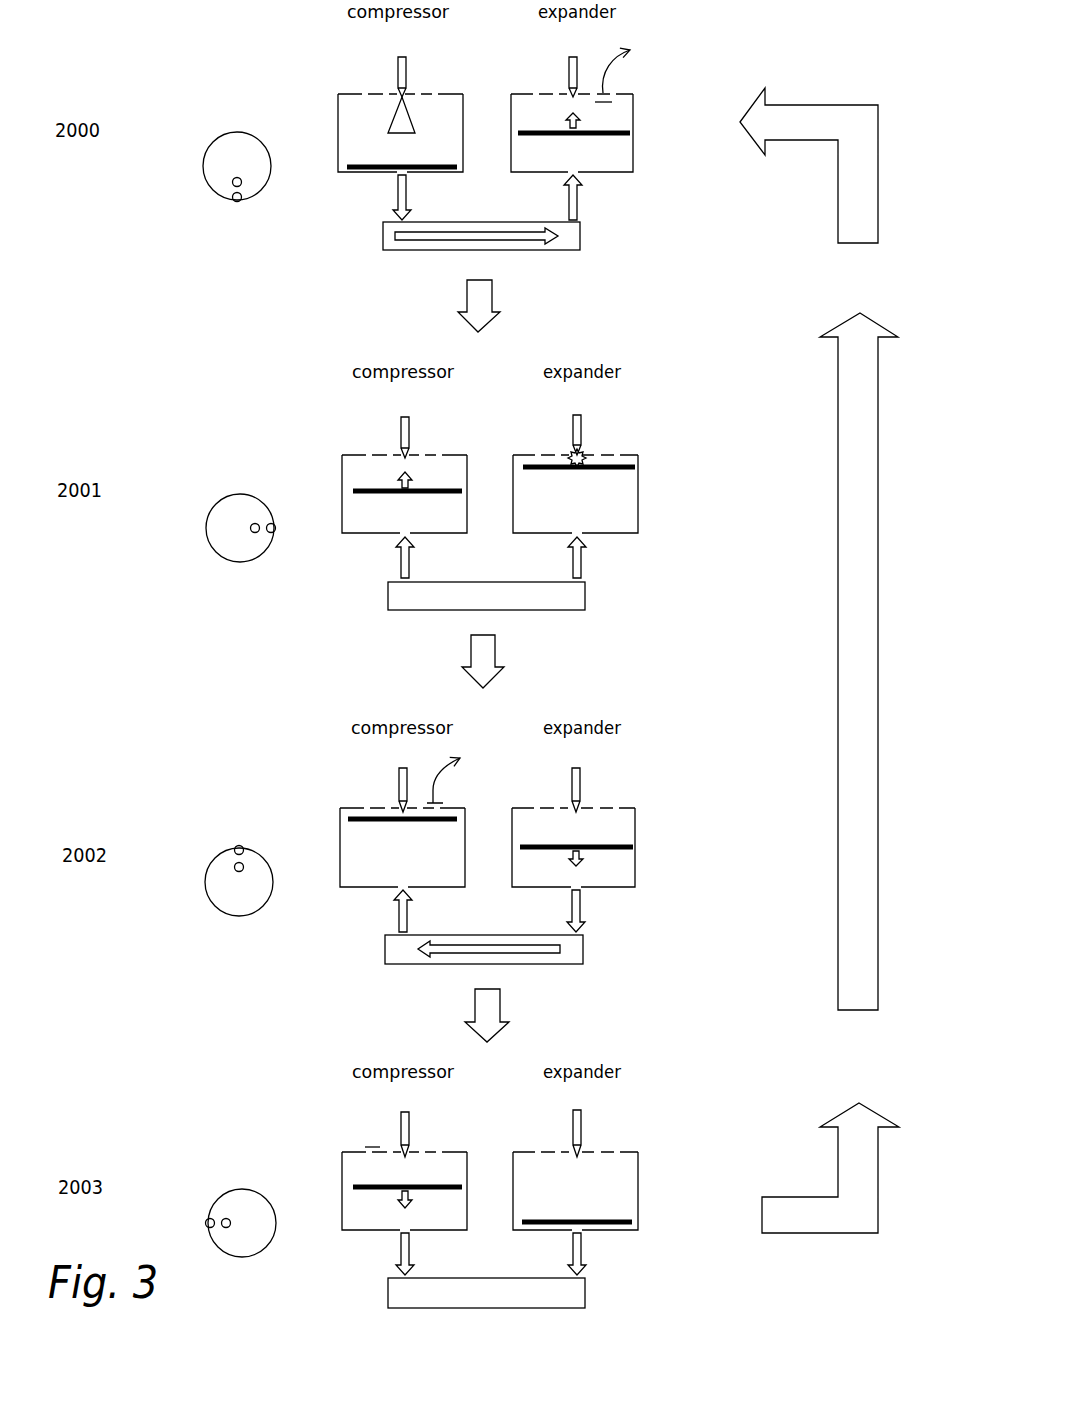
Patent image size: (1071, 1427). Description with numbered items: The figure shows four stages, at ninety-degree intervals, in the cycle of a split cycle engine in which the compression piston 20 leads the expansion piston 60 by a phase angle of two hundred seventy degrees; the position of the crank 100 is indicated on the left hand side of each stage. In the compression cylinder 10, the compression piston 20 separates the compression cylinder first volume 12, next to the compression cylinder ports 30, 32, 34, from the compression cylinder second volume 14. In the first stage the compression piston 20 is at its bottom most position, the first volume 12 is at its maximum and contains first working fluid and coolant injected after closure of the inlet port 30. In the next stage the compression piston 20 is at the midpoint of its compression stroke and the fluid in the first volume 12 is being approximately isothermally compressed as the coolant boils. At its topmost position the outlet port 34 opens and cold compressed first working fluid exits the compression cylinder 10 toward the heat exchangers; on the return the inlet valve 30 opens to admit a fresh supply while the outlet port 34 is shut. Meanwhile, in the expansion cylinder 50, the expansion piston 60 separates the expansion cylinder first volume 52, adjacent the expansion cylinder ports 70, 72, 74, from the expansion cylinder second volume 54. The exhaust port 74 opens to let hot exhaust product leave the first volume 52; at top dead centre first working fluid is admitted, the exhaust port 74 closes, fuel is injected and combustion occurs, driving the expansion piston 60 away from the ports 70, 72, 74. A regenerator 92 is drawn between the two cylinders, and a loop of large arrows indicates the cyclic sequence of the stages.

The compression cylinder 10 is at (318, 128).
The compression cylinder first volume 12 is at (365, 1167).
The compression cylinder second volume 14 is at (343, 170).
The compression piston 20 is at (347, 165).
The inlet port 30 is at (365, 93).
The compression cylinder port 32 is at (393, 93).
The outlet port 34 is at (433, 93).
The expansion cylinder 50 is at (645, 130).
The expansion cylinder first volume 52 is at (655, 1252).
The expansion cylinder second volume 54 is at (670, 875).
The expansion piston 60 is at (633, 133).
The expansion cylinder port 70 is at (538, 93).
The expansion cylinder port 72 is at (562, 93).
The exhaust port 74 is at (603, 93).
The regenerator 92 is at (580, 236).
The crank 100 is at (203, 161).